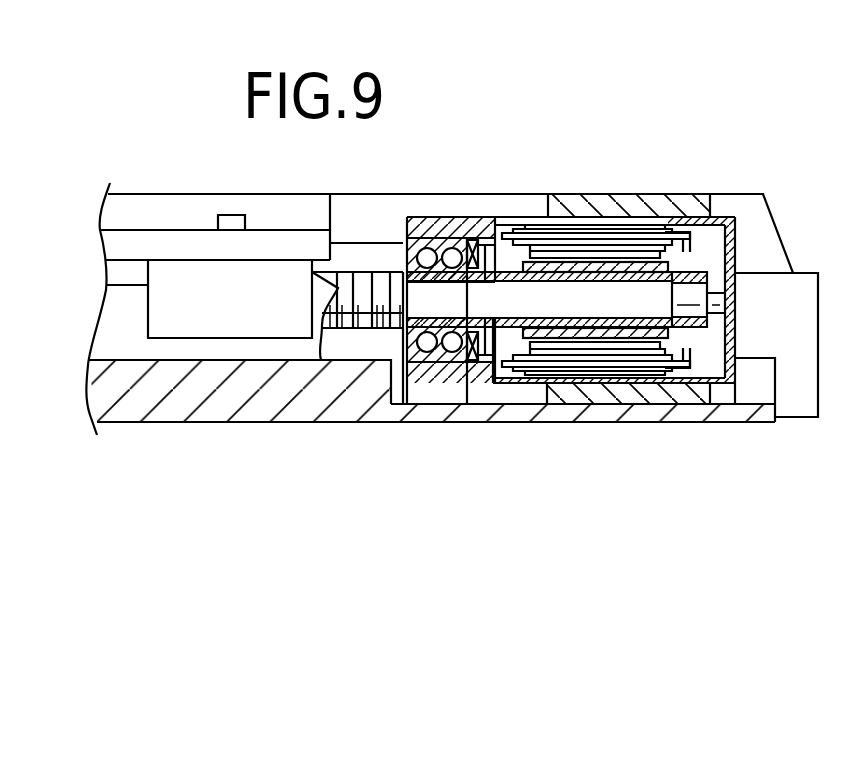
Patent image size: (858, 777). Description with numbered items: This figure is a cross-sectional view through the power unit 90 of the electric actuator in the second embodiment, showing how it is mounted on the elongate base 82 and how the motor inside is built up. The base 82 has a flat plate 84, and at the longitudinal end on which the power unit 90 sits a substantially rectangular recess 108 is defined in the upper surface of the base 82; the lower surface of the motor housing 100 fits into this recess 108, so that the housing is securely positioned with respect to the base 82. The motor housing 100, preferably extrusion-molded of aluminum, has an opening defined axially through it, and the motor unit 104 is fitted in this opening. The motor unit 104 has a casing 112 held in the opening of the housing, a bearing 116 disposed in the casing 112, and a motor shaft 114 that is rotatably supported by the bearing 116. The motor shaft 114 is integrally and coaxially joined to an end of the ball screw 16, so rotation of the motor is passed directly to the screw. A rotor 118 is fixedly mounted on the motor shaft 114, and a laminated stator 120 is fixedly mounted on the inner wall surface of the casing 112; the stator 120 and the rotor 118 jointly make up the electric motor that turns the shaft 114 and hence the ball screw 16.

The ball screw 16 is at (353, 330).
The elongate base 82 is at (580, 423).
The flat plate 84 is at (233, 398).
The power unit 90 is at (707, 167).
The motor housing 100 is at (637, 205).
The motor unit 104 is at (507, 213).
The recess 108 is at (748, 404).
The casing 112 is at (472, 375).
The motor shaft 114 is at (615, 303).
The bearing 116 is at (427, 357).
The rotor 118 is at (550, 337).
The laminated stator 120 is at (590, 245).